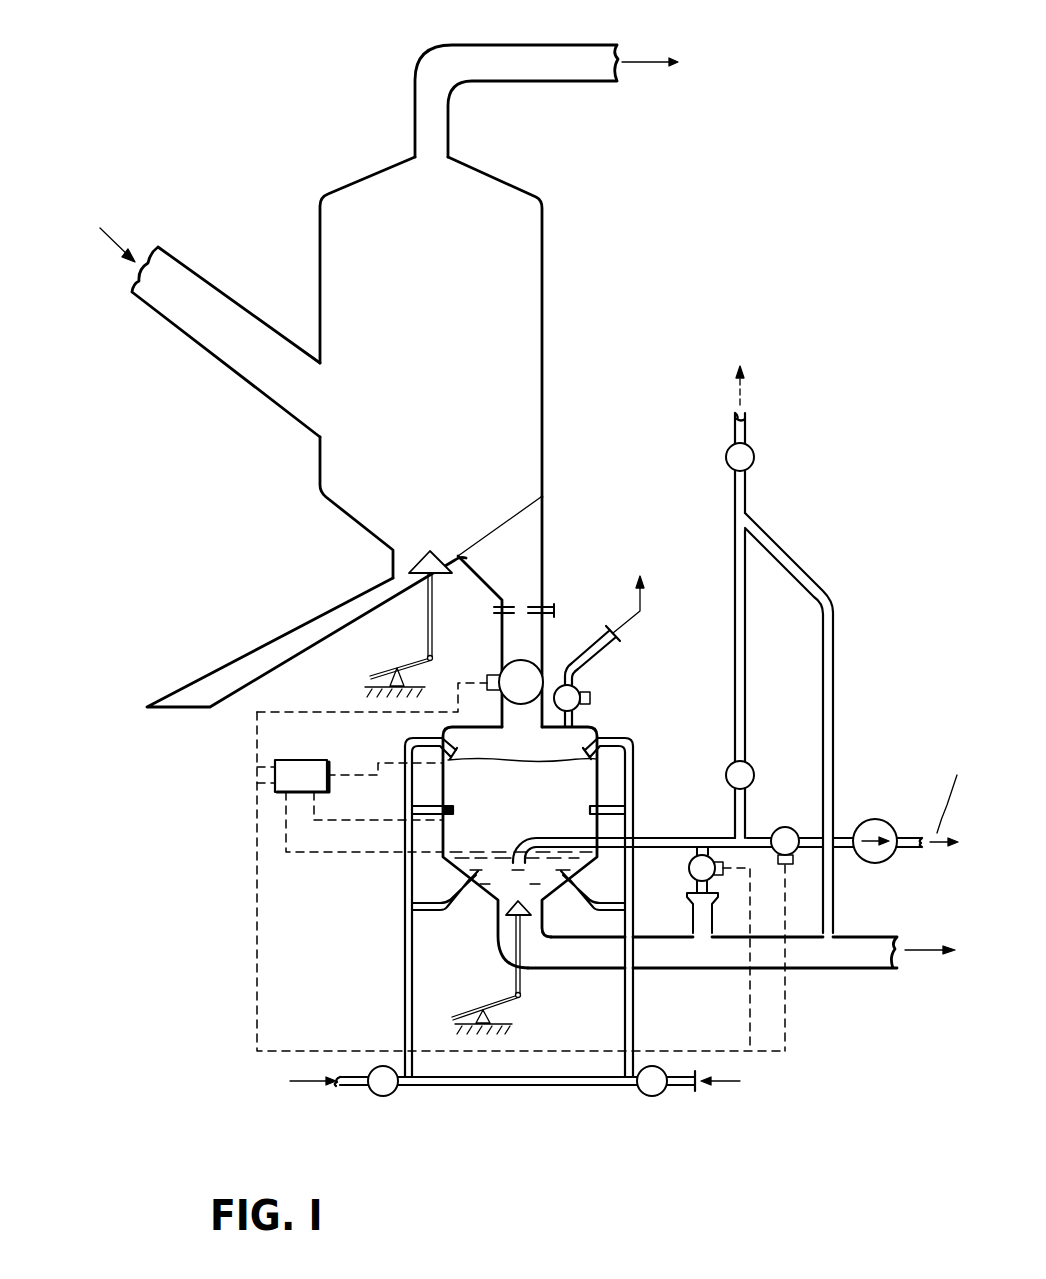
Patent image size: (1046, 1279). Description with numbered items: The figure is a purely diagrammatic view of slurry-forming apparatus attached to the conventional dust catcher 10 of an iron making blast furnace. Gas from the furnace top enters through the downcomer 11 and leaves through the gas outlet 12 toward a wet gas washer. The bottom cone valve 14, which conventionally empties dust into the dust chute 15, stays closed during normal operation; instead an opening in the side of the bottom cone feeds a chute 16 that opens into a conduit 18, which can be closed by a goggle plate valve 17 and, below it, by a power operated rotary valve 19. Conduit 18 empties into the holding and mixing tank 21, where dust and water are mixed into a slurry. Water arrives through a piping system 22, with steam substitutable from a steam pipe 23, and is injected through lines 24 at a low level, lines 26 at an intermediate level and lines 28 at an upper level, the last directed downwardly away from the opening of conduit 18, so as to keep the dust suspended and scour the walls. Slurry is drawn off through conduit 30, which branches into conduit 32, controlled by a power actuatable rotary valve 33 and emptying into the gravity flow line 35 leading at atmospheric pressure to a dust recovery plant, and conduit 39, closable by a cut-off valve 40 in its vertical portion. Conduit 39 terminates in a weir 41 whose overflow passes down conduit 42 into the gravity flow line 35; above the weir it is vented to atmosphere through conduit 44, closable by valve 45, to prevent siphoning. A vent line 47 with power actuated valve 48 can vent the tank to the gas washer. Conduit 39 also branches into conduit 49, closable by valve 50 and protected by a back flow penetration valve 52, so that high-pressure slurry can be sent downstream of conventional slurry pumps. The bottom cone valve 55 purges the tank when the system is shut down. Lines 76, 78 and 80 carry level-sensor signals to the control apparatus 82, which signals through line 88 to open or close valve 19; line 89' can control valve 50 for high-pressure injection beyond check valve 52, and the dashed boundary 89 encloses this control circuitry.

The dust catcher 10 is at (536, 258).
The downcomer 11 is at (236, 318).
The gas outlet 12 is at (545, 55).
The bottom cone valve 14 is at (428, 550).
The dust chute 15 is at (303, 640).
The chute 16 is at (541, 575).
The goggle plate valve 17 is at (551, 610).
The conduit 18 is at (502, 641).
The rotary valve 19 is at (534, 678).
The holding and mixing tank 21 is at (594, 728).
The piping system 22 is at (406, 1002).
The steam pipe 23 is at (369, 1093).
The injection lines 24 is at (450, 906).
The injection lines 26 is at (431, 808).
The injection lines 28 is at (417, 739).
The conduit 30 is at (555, 837).
The conduit 32 is at (694, 849).
The rotary valve 33 is at (688, 877).
The gravity flow line 35 is at (830, 961).
The conduit 39 is at (735, 674).
The cut-off valve 40 is at (727, 770).
The weir 41 is at (749, 546).
The conduit 42 is at (833, 670).
The conduit 44 is at (744, 498).
The valve 45 is at (755, 458).
The vent line 47 is at (608, 643).
The valve 48 is at (579, 693).
The conduit 49 is at (844, 830).
The valve 50 is at (778, 827).
The back flow penetration valve 52 is at (882, 824).
The bottom cone valve 55 is at (511, 917).
The electrical or fluid pressure line 76 is at (337, 853).
The electrical or fluid pressure line 78 is at (355, 821).
The electrical or fluid pressure line 80 is at (364, 771).
The control apparatus 82 is at (310, 760).
The electrical or fluid pressure line 88 is at (313, 711).
The control circuit 89 is at (521, 881).
The line 89' is at (779, 958).